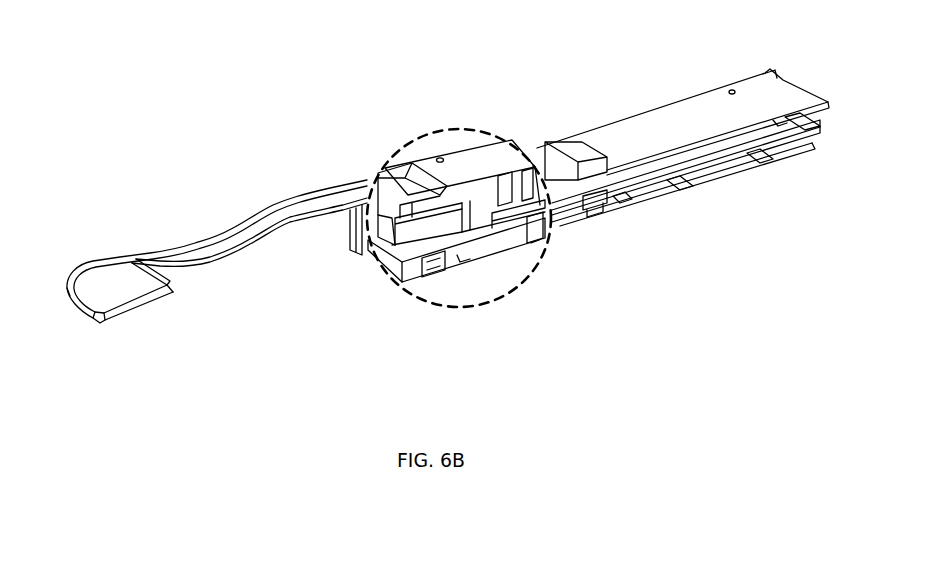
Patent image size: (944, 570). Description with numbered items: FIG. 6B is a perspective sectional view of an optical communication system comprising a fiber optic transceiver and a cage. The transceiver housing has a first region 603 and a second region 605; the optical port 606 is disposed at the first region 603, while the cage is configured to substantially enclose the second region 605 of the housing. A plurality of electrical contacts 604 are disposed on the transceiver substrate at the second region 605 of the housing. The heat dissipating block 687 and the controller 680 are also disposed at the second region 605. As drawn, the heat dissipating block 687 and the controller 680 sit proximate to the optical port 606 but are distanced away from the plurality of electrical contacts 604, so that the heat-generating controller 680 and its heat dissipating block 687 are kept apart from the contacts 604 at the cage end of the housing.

The first region 603 is at (563, 280).
The plurality of electrical contacts 604 is at (806, 141).
The second region 605 is at (845, 190).
The optical port 606 is at (381, 296).
The controller 680 is at (590, 203).
The heat dissipating block 687 is at (551, 160).